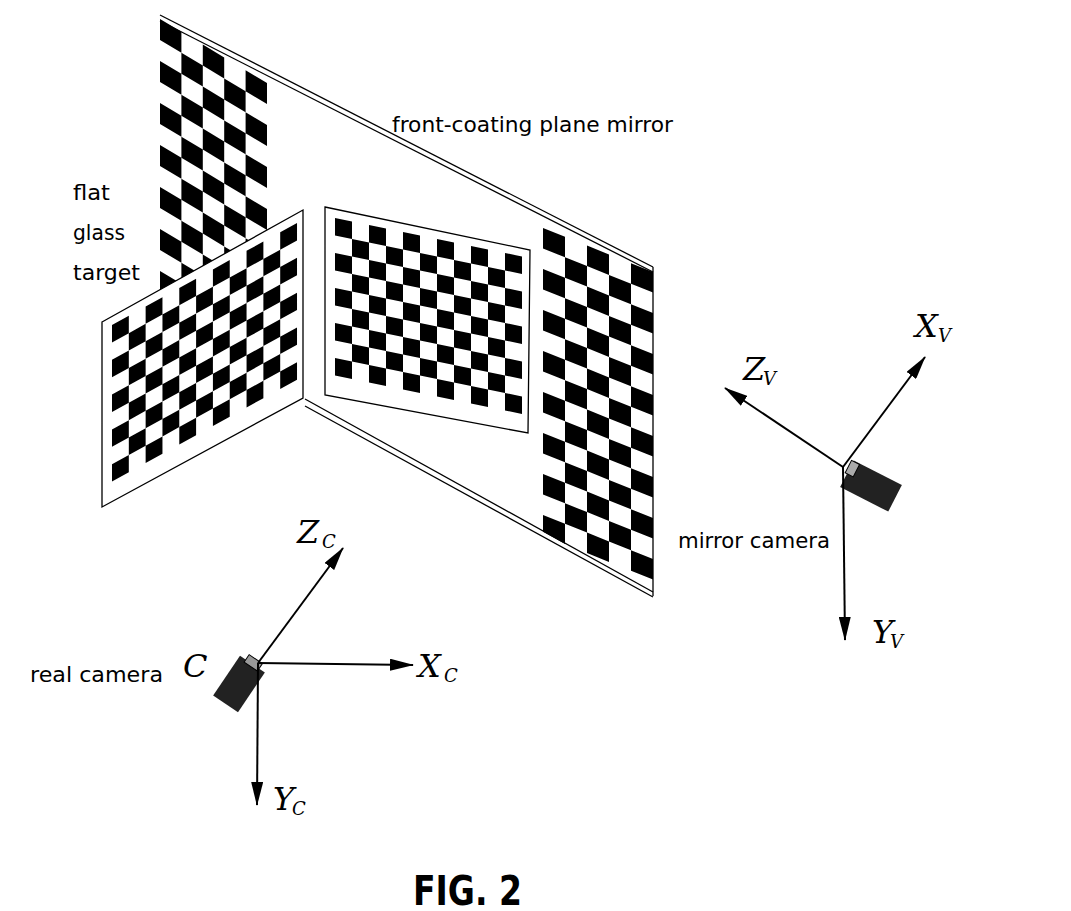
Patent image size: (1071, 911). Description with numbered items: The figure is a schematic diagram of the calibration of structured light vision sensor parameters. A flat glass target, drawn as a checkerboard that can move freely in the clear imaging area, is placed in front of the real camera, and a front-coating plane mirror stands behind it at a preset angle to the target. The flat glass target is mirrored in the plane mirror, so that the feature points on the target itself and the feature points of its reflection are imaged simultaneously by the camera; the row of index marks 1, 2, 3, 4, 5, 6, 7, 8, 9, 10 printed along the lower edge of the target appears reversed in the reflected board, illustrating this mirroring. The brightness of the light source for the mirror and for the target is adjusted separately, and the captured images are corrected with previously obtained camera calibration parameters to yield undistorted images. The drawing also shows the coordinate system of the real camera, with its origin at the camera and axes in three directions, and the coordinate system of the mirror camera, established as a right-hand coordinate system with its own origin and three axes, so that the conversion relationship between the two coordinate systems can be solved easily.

The checkerboard column index 1 is at (314, 454).
The checkerboard column index 2 is at (314, 448).
The checkerboard column index 3 is at (314, 442).
The checkerboard column index 4 is at (314, 436).
The checkerboard column index 5 is at (314, 430).
The checkerboard column index 6 is at (314, 424).
The checkerboard column index 7 is at (314, 417).
The checkerboard column index 8 is at (314, 411).
The checkerboard column index 9 is at (314, 405).
The checkerboard column index 10 is at (314, 401).